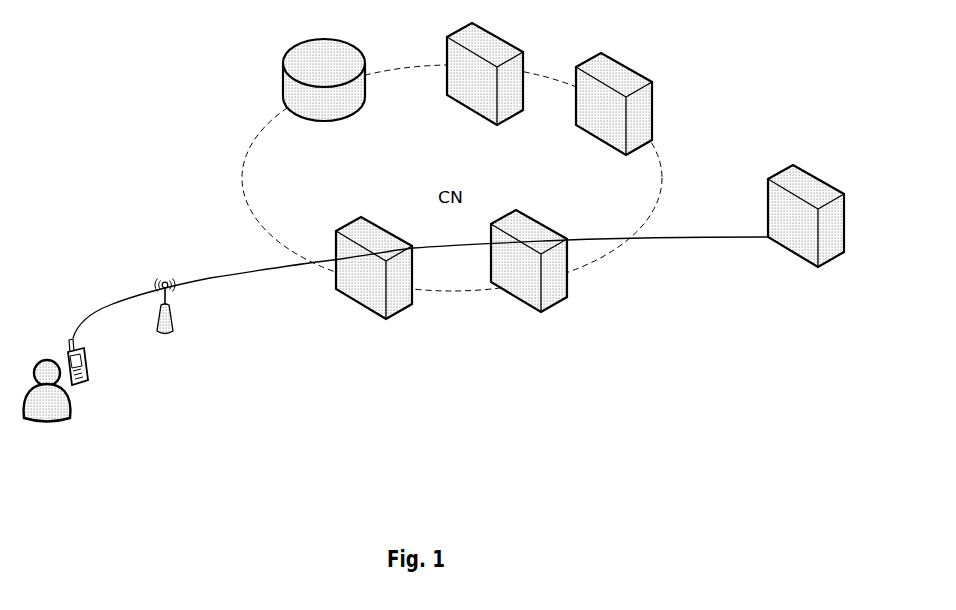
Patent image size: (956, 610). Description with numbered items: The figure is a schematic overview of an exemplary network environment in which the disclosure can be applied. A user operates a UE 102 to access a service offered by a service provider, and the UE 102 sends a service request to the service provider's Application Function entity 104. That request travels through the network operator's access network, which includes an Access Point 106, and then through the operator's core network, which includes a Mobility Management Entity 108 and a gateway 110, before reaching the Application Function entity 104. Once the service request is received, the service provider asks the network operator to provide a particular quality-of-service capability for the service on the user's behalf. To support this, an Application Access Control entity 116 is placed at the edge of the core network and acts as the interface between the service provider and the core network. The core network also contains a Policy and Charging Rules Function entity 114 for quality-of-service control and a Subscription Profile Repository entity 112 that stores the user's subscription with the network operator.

The UE 102 is at (85, 380).
The Application Function (AF) entity 104 is at (803, 228).
The Access Point (AP) 106 is at (165, 319).
The Mobility Management Entity (MME) 108 is at (371, 277).
The gateway (GW) 110 is at (528, 271).
The Subscription Profile Repository (SPR) entity 112 is at (324, 94).
The Policy and Charging Rules Function (PCRF) entity 114 is at (480, 86).
The Application Access Control (AAC) entity 116 is at (613, 114).